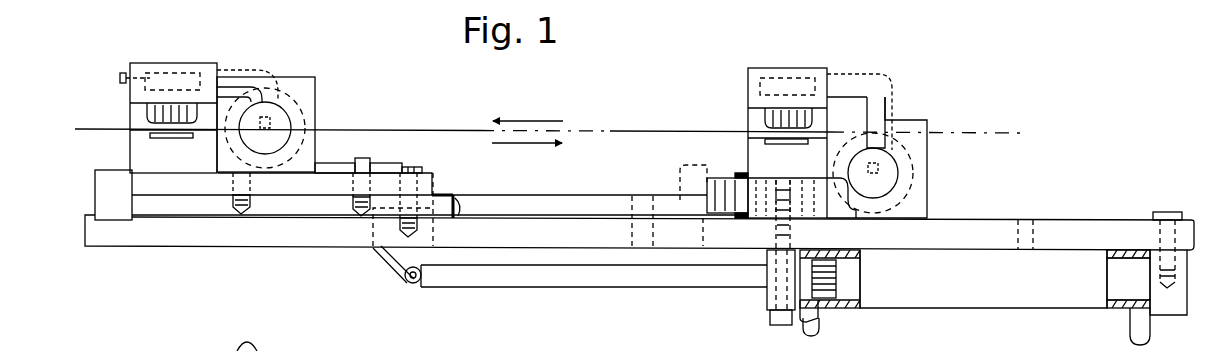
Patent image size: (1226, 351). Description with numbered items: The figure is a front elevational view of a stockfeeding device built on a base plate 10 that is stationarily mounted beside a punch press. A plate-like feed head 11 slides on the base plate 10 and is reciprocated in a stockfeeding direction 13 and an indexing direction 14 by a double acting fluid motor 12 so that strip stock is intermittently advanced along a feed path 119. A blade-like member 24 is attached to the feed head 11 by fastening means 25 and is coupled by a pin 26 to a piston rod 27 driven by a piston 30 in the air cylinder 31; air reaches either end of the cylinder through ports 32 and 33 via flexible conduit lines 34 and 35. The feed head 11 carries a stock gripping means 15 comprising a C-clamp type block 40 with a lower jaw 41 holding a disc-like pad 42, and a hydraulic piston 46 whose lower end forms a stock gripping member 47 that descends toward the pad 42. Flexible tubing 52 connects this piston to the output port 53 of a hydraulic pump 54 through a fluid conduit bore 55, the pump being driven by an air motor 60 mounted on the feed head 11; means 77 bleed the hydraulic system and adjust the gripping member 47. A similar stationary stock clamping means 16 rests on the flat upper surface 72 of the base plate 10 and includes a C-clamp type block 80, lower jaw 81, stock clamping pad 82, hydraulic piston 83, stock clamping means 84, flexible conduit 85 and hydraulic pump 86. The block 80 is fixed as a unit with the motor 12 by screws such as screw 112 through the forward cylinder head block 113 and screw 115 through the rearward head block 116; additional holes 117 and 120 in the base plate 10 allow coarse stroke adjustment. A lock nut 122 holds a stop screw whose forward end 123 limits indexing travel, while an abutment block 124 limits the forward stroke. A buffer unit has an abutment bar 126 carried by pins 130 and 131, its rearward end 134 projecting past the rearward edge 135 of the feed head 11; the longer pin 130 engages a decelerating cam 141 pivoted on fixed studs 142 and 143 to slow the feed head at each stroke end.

The base plate 10 is at (253, 250).
The feed head 11 is at (418, 152).
The double acting fluid motor 12 is at (1002, 310).
The stockfeeding direction 13 is at (517, 121).
The indexing direction 14 is at (520, 143).
The stock gripping means 15 is at (207, 62).
The stock clamping means 16 is at (832, 67).
The blade-like member 24 is at (395, 258).
The fastening means 25 is at (423, 169).
The pin 26 is at (415, 284).
The piston rod 27 is at (630, 288).
The piston 30 is at (836, 281).
The air cylinder 31 is at (1126, 255).
The cylinder port 32 is at (821, 316).
The cylinder port 33 is at (1144, 300).
The flexible conduit line 34 is at (808, 332).
The flexible conduit line 35 is at (1128, 326).
The C-clamp type block 40 is at (130, 140).
The lower jaw 41 is at (197, 168).
The pad 42 is at (160, 139).
The hydraulic piston 46 is at (147, 111).
The stock gripping member 47 is at (147, 123).
The flexible tubing 52 is at (246, 72).
The output port 53 is at (300, 72).
The hydraulic pump 54 is at (298, 128).
The fluid conduit bore 55 is at (292, 117).
The air motor 60 is at (321, 76).
The upper surface 72 is at (957, 218).
The bleed and adjusting means 77 is at (120, 76).
The C-clamp type block 80 is at (748, 138).
The lower jaw 81 is at (809, 166).
The stock clamping pad 82 is at (776, 144).
The hydraulic piston 83 is at (765, 114).
The stock clamping means 84 is at (765, 127).
The flexible conduit 85 is at (886, 82).
The hydraulic pump 86 is at (900, 173).
The screw 112 is at (795, 236).
The forward cylinder head block 113 is at (767, 302).
The screw 115 is at (1185, 270).
The rearward head block 116 is at (1172, 310).
The additional holes 117 is at (700, 238).
The feed path 119 is at (617, 131).
The additional holes 120 is at (1090, 236).
The lock nut 122 is at (738, 178).
The forward end of stop screw 123 is at (852, 220).
The abutment block 124 is at (96, 176).
The abutment bar 126 is at (441, 198).
The pin 130 is at (363, 158).
The pin 131 is at (232, 190).
The rearward end of bar 134 is at (459, 214).
The rearward edge 135 is at (438, 186).
The decelerating cam 141 is at (310, 175).
The fixed stud 142 is at (382, 163).
The fixed stud 143 is at (321, 162).